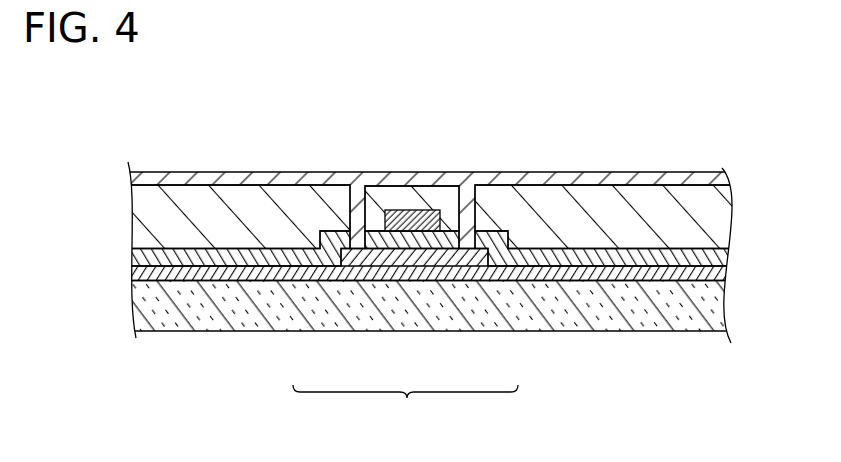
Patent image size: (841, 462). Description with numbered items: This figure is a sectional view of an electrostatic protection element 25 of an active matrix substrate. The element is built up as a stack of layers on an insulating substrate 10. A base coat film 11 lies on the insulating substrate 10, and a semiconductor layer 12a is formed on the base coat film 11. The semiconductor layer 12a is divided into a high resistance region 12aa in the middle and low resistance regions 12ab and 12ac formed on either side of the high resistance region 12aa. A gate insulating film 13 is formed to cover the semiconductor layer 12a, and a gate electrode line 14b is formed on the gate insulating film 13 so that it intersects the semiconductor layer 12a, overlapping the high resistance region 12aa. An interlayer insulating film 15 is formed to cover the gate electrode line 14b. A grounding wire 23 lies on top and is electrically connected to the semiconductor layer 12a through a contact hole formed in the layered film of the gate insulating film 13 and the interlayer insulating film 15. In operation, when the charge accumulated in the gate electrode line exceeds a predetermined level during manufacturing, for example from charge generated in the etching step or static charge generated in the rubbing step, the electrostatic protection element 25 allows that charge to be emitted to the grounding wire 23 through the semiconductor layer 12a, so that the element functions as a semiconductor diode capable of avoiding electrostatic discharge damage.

The electrostatic protection element 25 is at (375, 138).
The gate electrode line 14b is at (413, 210).
The grounding wire 23 is at (717, 184).
The interlayer insulating film 15 is at (718, 221).
The gate insulating film 13 is at (717, 260).
The base coat film 11 is at (717, 277).
The insulating substrate 10 is at (713, 315).
The semiconductor layer 12a is at (405, 409).
The low resistance region 12ab is at (352, 262).
The high resistance region 12aa is at (410, 262).
The low resistance region 12ac is at (465, 262).